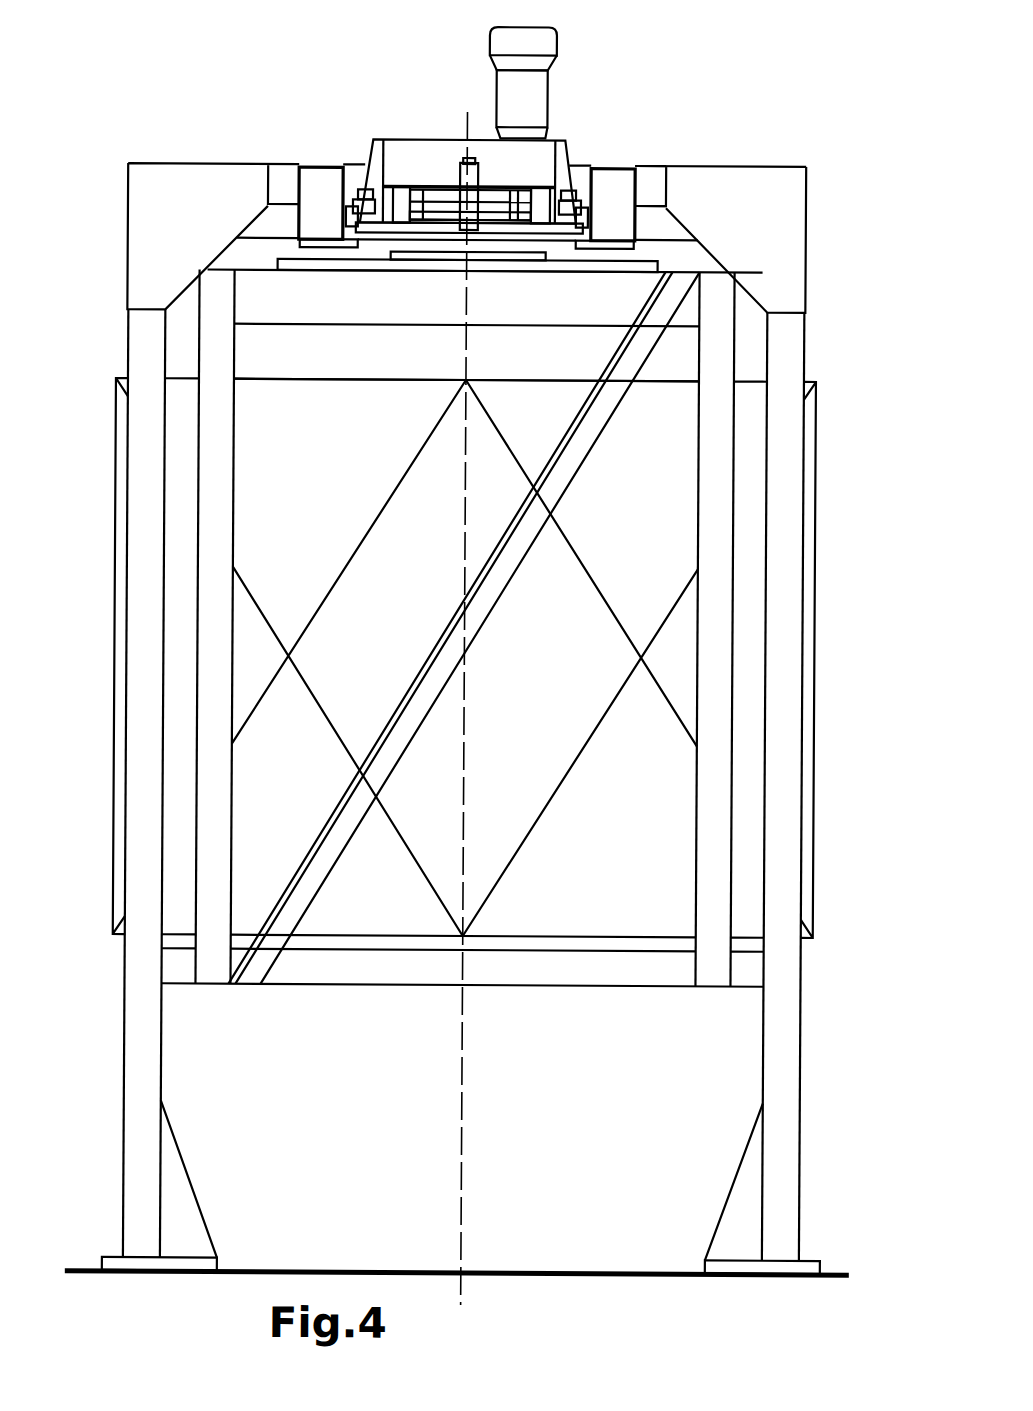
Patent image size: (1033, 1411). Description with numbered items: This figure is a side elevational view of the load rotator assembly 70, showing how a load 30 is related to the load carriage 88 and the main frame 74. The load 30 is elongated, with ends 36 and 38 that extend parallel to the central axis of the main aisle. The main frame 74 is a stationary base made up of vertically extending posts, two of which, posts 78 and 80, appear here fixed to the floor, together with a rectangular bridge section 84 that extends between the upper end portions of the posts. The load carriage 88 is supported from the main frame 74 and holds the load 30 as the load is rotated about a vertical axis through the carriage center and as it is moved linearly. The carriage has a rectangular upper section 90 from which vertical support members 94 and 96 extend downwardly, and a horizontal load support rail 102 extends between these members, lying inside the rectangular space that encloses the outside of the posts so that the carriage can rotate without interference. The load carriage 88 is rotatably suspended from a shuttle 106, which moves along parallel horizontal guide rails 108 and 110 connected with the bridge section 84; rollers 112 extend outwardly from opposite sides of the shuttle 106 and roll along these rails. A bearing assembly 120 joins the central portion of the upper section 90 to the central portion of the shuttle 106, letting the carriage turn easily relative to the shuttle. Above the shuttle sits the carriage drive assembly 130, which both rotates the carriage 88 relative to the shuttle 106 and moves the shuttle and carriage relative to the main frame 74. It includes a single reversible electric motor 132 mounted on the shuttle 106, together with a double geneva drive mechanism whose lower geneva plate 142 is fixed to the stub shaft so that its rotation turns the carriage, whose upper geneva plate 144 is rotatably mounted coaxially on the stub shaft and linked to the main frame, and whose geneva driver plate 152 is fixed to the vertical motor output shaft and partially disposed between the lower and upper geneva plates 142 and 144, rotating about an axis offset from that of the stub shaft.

The load 30 is at (822, 551).
The end 36 is at (114, 735).
The end 38 is at (818, 668).
The load rotator assembly 70 is at (822, 118).
The main frame 74 is at (808, 256).
The post 78 is at (148, 1043).
The post 80 is at (775, 1032).
The bridge section 84 is at (648, 183).
The load carriage 88 is at (403, 988).
The upper section 90 is at (493, 302).
The vertical support member 94 is at (213, 862).
The vertical support member 96 is at (720, 872).
The load support rail 102 is at (522, 968).
The shuttle 106 is at (548, 238).
The guide rail 108 is at (343, 232).
The guide rail 110 is at (600, 237).
The rollers 112 is at (340, 220).
The bearing assembly 120 is at (410, 251).
The carriage drive assembly 130 is at (472, 130).
The electric motor 132 is at (537, 90).
The lower geneva plate 142 is at (380, 187).
The upper geneva plate 144 is at (428, 205).
The geneva driver plate 152 is at (410, 213).